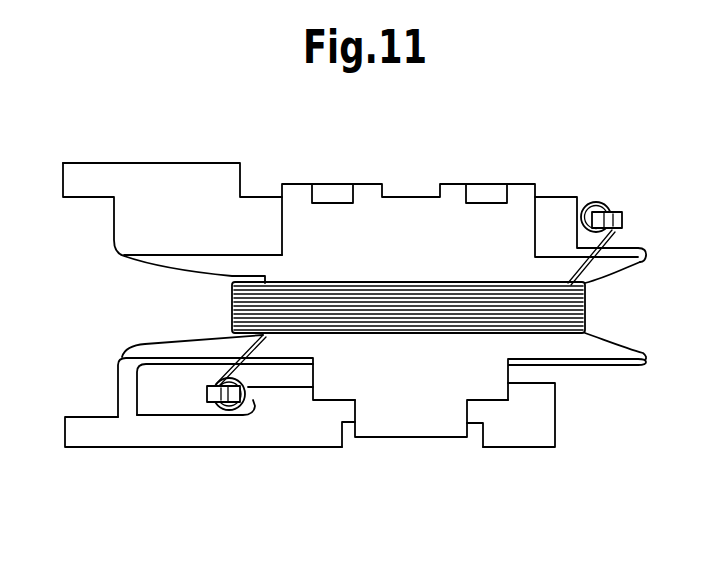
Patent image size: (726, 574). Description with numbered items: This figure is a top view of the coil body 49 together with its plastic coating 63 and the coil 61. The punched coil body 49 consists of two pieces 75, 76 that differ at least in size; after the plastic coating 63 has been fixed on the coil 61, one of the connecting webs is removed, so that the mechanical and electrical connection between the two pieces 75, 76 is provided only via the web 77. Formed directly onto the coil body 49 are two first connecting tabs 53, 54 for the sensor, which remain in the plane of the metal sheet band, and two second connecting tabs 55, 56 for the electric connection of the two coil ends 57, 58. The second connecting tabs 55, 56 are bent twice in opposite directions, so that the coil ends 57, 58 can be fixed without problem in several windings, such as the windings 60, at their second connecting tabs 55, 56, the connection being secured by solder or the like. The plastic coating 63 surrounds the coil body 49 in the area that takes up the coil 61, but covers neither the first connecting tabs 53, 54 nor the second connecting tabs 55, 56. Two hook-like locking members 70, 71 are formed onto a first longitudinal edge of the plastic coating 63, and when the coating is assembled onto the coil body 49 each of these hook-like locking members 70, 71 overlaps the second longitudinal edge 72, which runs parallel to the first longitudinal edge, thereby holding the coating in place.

The coil body 49 is at (274, 458).
The first connecting tab 53 is at (88, 175).
The first connecting tab 54 is at (93, 437).
The second connecting tab 55 is at (622, 219).
The second connecting tab 56 is at (214, 397).
The coil end 57 is at (596, 275).
The coil end 58 is at (232, 365).
The windings 60 is at (596, 202).
The coil 61 is at (587, 322).
The plastic coating 63 is at (438, 430).
The hook-like locking member 70 is at (492, 191).
The hook-like locking member 71 is at (333, 190).
The second longitudinal edge 72 is at (420, 195).
The piece of coil body 75 is at (205, 187).
The piece of coil body 76 is at (538, 420).
The web 77 is at (127, 393).